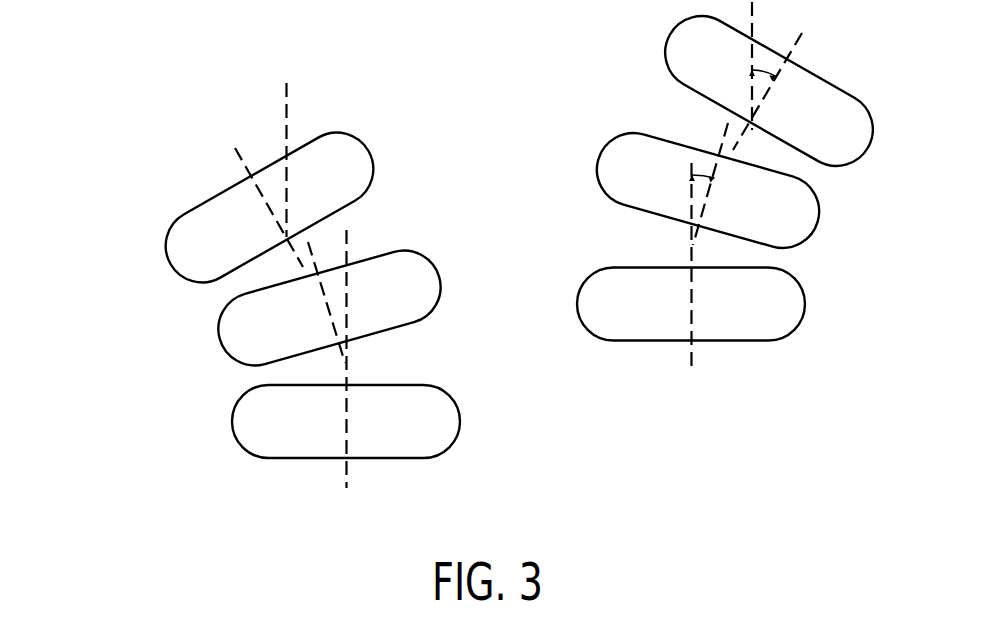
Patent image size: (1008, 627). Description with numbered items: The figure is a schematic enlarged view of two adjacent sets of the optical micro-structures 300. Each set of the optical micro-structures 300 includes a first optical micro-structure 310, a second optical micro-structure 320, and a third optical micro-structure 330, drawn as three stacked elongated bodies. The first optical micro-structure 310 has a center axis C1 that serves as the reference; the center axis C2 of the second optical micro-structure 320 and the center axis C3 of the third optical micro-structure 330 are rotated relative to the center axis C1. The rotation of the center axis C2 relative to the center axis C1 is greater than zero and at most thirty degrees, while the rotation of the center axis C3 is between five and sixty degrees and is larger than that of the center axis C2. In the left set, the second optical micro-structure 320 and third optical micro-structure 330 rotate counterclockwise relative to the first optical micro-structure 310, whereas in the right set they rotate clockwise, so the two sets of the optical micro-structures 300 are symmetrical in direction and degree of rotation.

The set of optical micro-structures 300 is at (254, 285).
The first optical micro-structure 310 is at (273, 432).
The second optical micro-structure 320 is at (240, 334).
The third optical micro-structure 330 is at (187, 264).
The center axis of the first optical micro-structure C1 is at (692, 360).
The center axis of the second optical micro-structure C2 is at (702, 210).
The center axis of the third optical micro-structure C3 is at (799, 42).